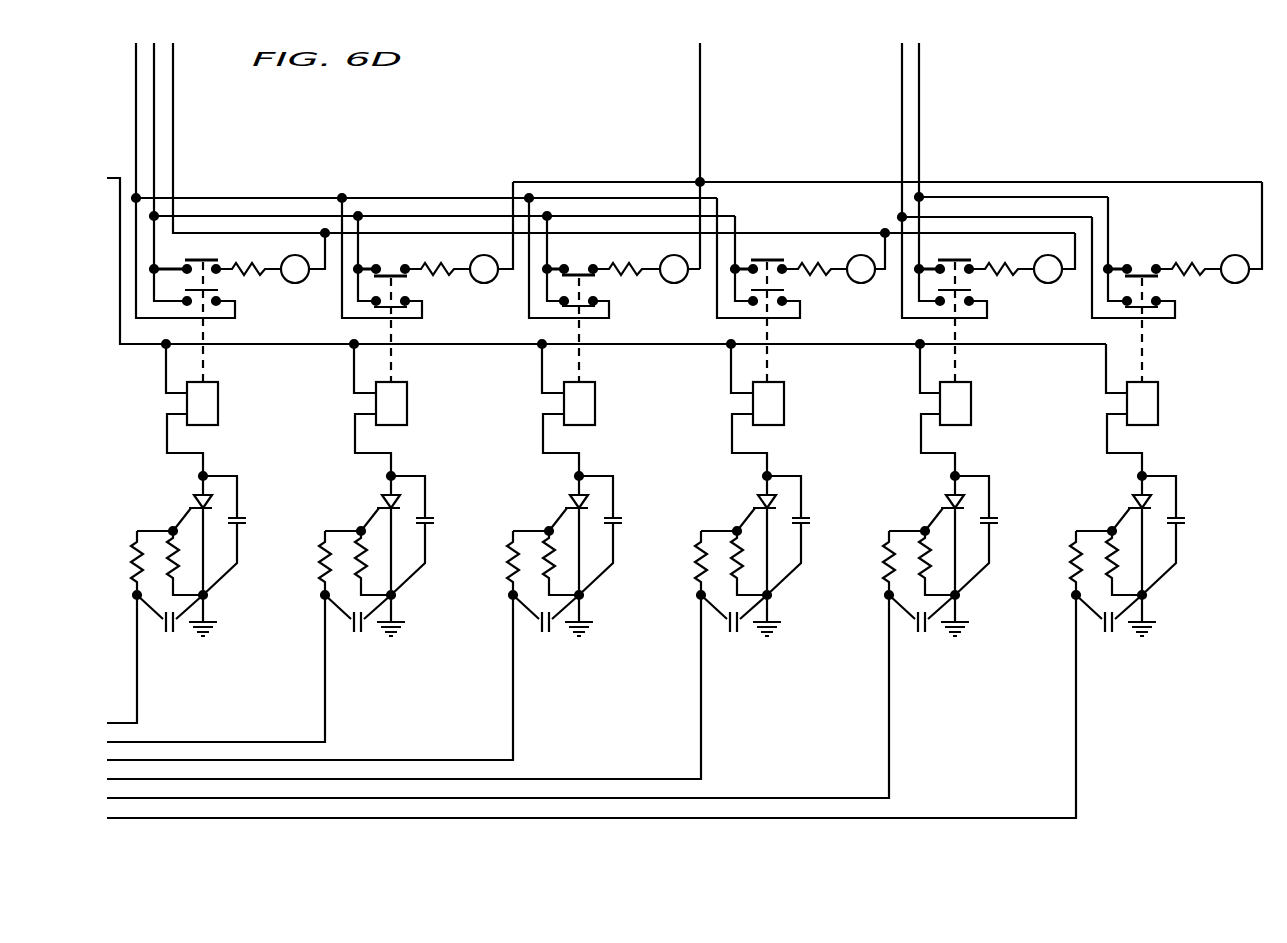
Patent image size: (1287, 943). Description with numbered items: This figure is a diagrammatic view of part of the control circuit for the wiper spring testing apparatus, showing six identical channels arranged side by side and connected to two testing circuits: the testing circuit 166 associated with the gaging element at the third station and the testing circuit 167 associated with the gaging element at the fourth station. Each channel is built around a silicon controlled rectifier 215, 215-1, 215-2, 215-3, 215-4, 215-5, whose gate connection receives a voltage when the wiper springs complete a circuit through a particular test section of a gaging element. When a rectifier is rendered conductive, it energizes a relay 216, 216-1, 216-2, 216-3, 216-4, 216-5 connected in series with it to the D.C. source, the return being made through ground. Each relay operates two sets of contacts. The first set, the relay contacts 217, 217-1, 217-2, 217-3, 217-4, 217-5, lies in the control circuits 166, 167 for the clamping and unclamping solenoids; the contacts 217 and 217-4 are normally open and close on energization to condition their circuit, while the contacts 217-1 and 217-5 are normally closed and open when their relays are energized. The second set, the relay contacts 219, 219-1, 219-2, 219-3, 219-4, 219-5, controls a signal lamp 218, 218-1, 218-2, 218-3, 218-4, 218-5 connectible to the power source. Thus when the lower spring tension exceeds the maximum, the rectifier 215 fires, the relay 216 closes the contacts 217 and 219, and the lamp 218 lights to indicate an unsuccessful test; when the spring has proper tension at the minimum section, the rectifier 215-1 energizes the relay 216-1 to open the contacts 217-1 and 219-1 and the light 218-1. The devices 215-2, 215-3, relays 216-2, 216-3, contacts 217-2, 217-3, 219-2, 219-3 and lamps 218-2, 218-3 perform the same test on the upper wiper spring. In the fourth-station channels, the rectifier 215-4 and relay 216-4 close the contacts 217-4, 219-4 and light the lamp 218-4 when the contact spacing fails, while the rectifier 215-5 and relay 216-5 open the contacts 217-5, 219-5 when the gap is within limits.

The testing circuit 166 is at (438, 211).
The testing circuit 167 is at (1017, 192).
The silicon controlled rectifier 215 is at (197, 503).
The silicon controlled rectifier 215-1 is at (385, 505).
The silicon controlled device 215-2 is at (573, 505).
The silicon controlled device 215-3 is at (761, 505).
The silicon controlled rectifier 215-4 is at (949, 505).
The silicon controlled rectifier 215-5 is at (1135, 506).
The relay 216 is at (218, 402).
The relay 216-1 is at (407, 402).
The relay 216-2 is at (595, 402).
The relay 216-3 is at (784, 402).
The control relay 216-4 is at (971, 402).
The control relay 216-5 is at (1158, 400).
The relay contacts 217 is at (214, 289).
The relay contacts 217-1 is at (400, 300).
The relay contacts 217-2 is at (590, 298).
The relay contacts 217-3 is at (780, 290).
The relay contacts 217-4 is at (967, 290).
The relay contacts 217-5 is at (1152, 298).
The signal lamp 218 is at (296, 283).
The signal light 218-1 is at (485, 283).
The indicating lamp 218-2 is at (675, 283).
The indicating lamp 218-3 is at (862, 283).
The light 218-4 is at (1049, 283).
The signal lamp 218-5 is at (1236, 283).
The relay contacts 219 is at (214, 262).
The relay contacts 219-1 is at (395, 264).
The relay contacts 219-2 is at (586, 264).
The relay contacts 219-3 is at (782, 262).
The relay contacts 219-4 is at (965, 262).
The relay contacts 219-5 is at (1149, 264).